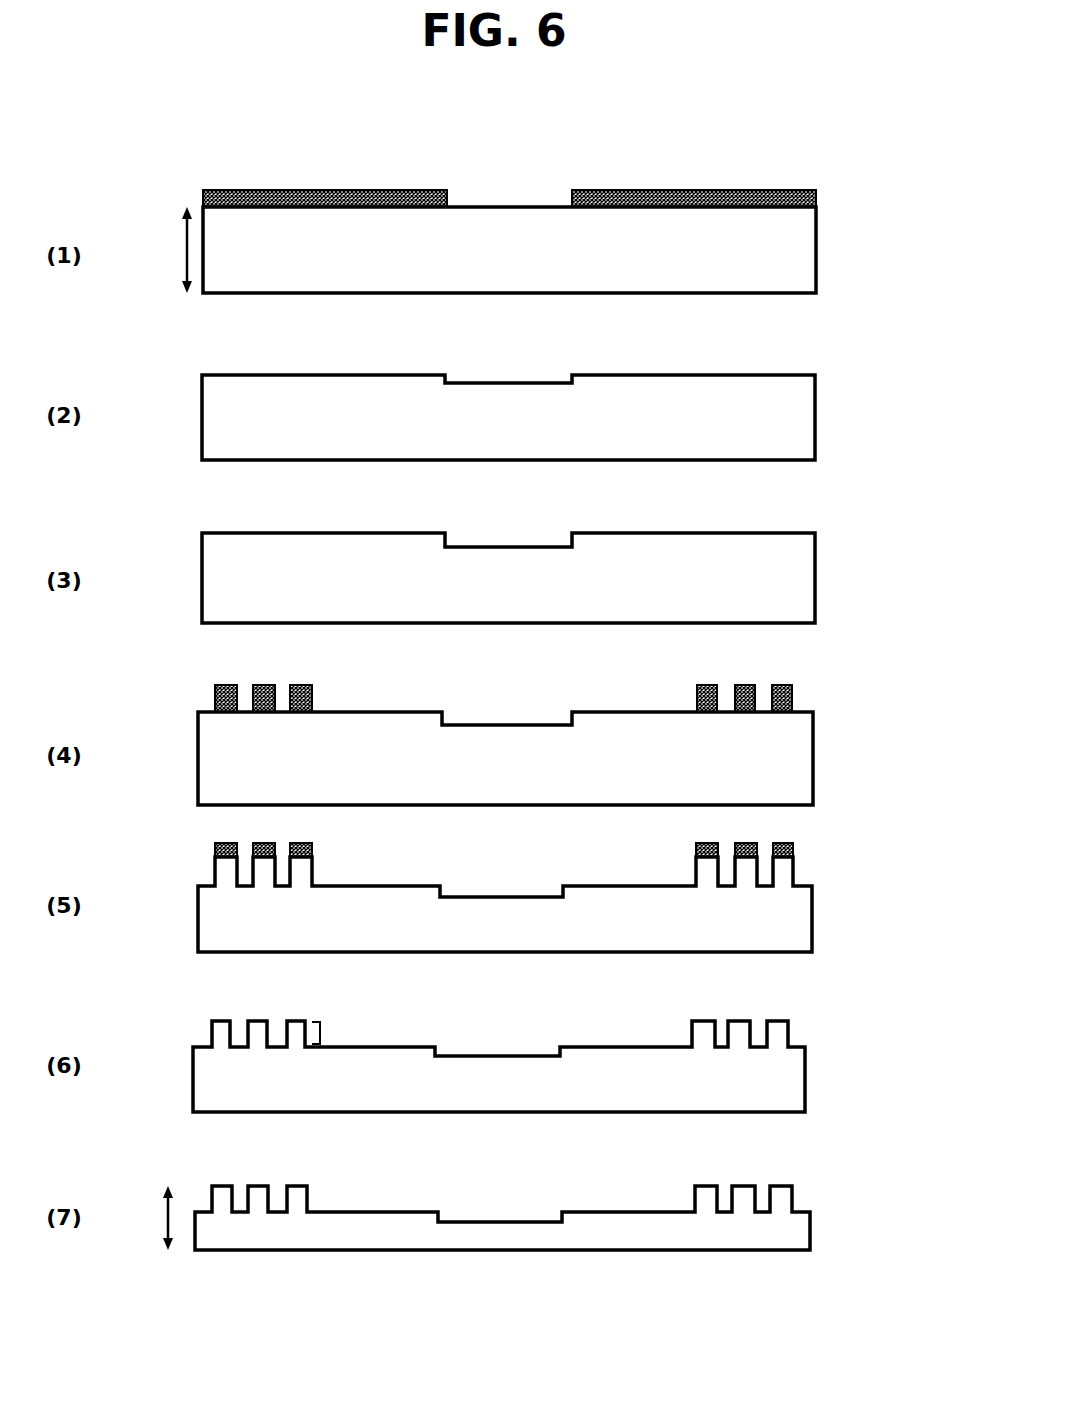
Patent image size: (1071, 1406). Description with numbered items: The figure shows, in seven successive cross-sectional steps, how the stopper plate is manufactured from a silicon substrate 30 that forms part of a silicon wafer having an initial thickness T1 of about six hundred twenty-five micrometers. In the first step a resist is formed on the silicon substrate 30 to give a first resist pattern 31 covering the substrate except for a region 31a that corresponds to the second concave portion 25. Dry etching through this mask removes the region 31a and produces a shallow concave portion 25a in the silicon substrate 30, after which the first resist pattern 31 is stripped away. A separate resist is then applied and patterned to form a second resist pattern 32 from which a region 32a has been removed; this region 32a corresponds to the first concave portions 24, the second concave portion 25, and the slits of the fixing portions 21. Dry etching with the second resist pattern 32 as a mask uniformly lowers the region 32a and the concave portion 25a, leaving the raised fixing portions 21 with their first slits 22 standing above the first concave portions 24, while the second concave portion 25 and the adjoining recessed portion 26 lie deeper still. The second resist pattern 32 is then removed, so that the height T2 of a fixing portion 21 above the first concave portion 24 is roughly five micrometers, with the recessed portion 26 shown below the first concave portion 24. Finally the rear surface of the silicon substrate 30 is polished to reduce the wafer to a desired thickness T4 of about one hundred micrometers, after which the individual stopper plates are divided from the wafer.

The silicon substrate 30 is at (788, 258).
The first resist pattern 31 is at (672, 192).
The region 31a is at (518, 188).
The concave portion 25a is at (498, 383).
The second resist pattern 32 is at (792, 693).
The region 32a is at (378, 703).
The fixing portion 21 is at (215, 872).
The first slit 22 is at (242, 870).
The first concave portion 24 is at (380, 886).
The second concave portion 25 is at (517, 897).
The recessed portion 26 is at (462, 896).
The thickness T1 is at (168, 250).
The height T2 is at (327, 1022).
The thickness T4 is at (148, 1218).